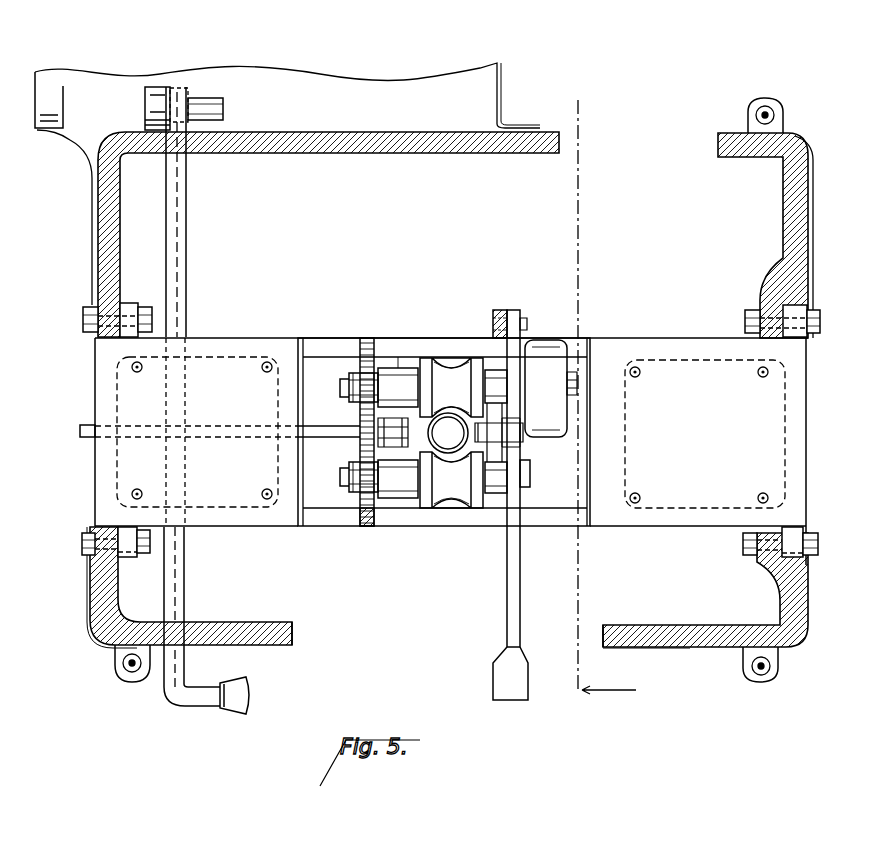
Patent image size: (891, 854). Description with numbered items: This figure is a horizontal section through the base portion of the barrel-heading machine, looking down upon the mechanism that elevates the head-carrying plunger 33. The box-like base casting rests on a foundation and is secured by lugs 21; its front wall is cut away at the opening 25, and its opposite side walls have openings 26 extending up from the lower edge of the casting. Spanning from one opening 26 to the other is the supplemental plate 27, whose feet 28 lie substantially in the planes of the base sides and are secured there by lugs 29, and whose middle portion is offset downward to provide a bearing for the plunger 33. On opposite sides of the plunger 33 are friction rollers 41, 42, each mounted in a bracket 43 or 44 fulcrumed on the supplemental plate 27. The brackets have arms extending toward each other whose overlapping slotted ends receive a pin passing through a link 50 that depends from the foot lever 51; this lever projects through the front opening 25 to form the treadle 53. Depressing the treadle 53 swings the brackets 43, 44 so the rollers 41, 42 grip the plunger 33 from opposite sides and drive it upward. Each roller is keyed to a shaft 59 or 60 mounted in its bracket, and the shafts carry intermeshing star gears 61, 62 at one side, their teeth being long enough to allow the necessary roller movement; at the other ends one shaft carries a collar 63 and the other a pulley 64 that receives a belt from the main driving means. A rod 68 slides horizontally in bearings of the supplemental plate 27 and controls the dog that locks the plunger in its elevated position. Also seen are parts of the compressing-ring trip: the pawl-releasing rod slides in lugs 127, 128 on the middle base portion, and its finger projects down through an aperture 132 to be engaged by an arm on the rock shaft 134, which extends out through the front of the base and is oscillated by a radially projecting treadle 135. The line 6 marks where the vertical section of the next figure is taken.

The section line 6— 6 is at (603, 398).
The lugs 21 is at (781, 111).
The front opening 25 is at (296, 635).
The side openings 26 is at (103, 527).
The supplemental plate 27 is at (612, 530).
The feet 28 is at (133, 558).
The lugs 29 is at (125, 306).
The plunger 33 is at (438, 433).
The friction roller 41 is at (451, 387).
The friction roller 42 is at (451, 480).
The bracket 43 is at (404, 373).
The bracket 44 is at (402, 485).
The link 50 is at (512, 442).
The foot lever 51 is at (568, 310).
The treadle 53 is at (505, 677).
The shaft 59 is at (372, 472).
The shaft 60 is at (372, 382).
The star gear 61 is at (368, 338).
The star gear 62 is at (358, 526).
The collar 63 is at (524, 489).
The pulley 64 is at (551, 388).
The rod 68 is at (90, 438).
The lug 127 is at (54, 96).
The lug 128 is at (157, 95).
The aperture 132 is at (226, 104).
The rock shaft 134 is at (177, 268).
The treadle 135 is at (232, 704).